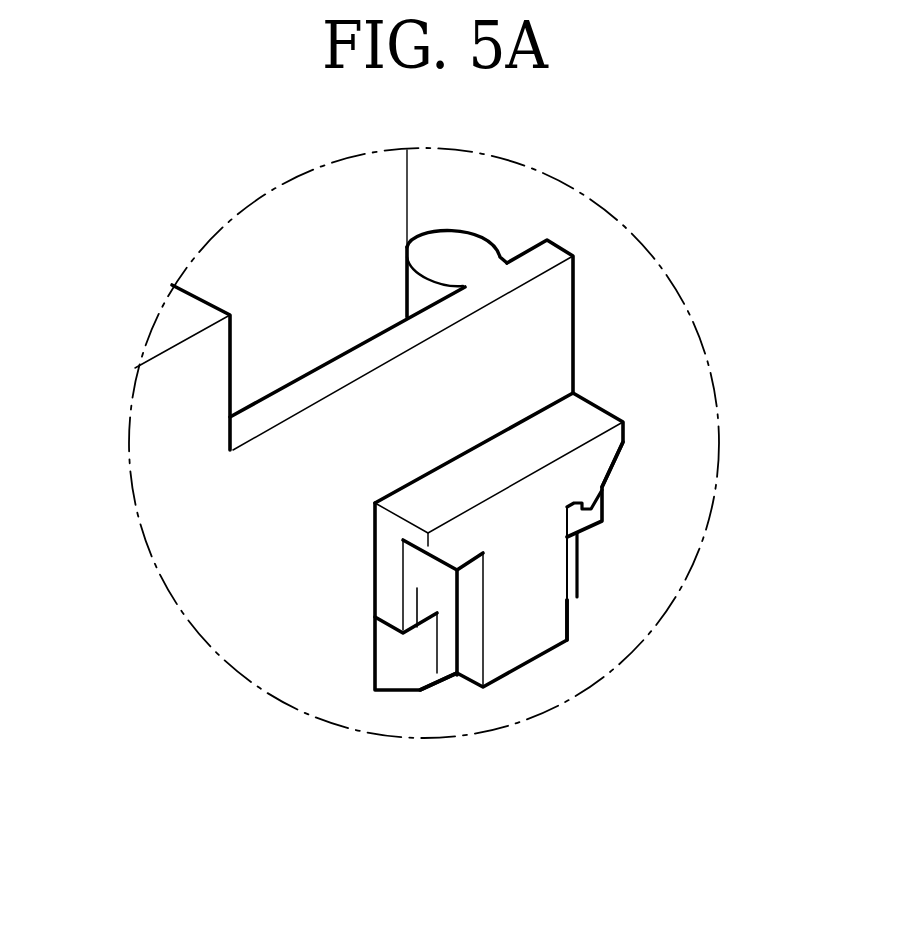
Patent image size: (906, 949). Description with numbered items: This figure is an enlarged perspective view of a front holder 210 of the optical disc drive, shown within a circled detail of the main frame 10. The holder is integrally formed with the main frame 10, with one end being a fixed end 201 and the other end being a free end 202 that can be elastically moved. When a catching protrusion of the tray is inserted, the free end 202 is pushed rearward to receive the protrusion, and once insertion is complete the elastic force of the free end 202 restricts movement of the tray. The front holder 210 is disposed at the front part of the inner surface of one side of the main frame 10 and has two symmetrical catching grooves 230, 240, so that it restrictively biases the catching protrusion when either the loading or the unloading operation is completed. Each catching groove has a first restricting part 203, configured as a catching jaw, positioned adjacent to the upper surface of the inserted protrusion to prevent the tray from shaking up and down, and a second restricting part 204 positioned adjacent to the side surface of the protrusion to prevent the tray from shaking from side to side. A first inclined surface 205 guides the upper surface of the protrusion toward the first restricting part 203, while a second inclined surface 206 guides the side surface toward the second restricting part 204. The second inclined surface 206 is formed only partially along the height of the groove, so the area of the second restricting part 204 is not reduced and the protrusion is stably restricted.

The main frame 10 is at (198, 300).
The fixed end 201 is at (257, 550).
The free end 202 is at (557, 341).
The first restricting part 203 is at (582, 507).
The second restricting part 204 is at (433, 612).
The first inclined surface 205 is at (417, 588).
The second inclined surface 206 is at (425, 673).
The front holder 210 is at (592, 286).
The catching groove 230 is at (458, 674).
The catching groove 240 is at (588, 598).